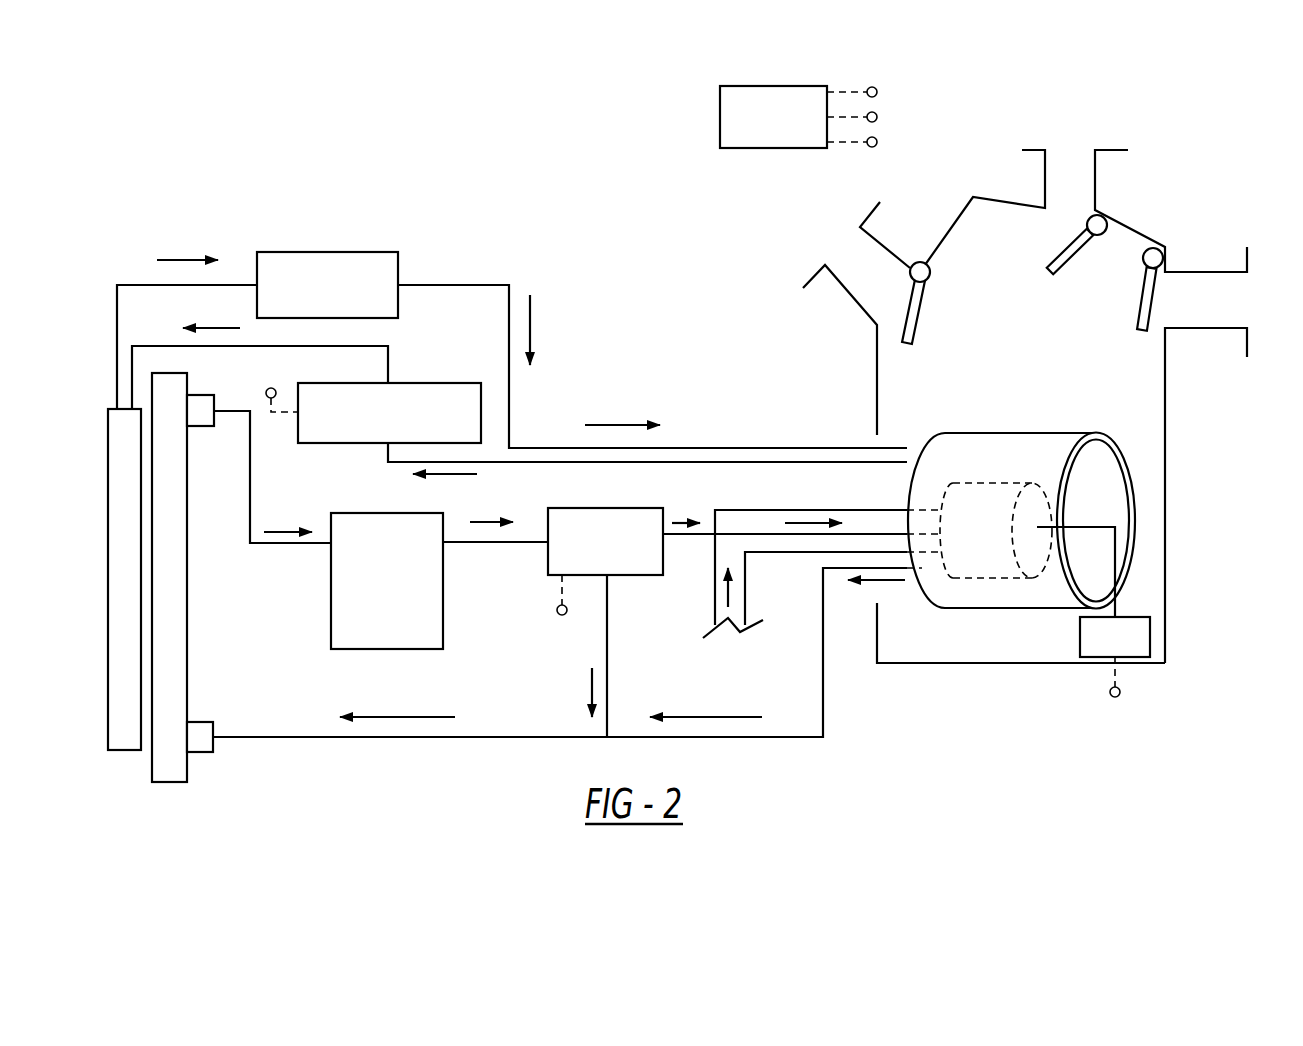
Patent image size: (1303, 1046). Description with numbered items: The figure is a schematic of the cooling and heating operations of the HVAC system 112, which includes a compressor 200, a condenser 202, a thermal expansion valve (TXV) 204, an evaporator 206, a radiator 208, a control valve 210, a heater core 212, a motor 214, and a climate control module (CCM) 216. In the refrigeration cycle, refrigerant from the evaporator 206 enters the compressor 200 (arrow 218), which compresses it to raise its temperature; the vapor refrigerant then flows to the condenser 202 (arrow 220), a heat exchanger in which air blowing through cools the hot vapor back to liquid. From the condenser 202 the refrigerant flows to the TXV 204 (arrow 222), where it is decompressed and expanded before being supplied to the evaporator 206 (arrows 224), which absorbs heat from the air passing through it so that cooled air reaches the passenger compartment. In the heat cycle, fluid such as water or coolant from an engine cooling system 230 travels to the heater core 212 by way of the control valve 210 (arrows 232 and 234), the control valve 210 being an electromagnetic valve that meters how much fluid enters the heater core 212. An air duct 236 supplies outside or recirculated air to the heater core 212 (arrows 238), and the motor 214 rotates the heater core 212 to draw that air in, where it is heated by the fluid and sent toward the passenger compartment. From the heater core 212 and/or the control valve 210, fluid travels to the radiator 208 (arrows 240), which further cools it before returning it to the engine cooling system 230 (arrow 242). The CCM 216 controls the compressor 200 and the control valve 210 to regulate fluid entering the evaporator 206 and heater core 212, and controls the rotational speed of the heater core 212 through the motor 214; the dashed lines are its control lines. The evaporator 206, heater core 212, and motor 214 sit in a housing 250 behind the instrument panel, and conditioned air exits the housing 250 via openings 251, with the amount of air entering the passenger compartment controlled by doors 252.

The HVAC system 112 is at (247, 160).
The compressor 200 is at (430, 383).
The condenser 202 is at (109, 457).
The thermal expansion valve (TXV) 204 is at (380, 255).
The evaporator 206 is at (1037, 433).
The radiator 208 is at (187, 560).
The control valve 210 is at (547, 563).
The heater core 212 is at (970, 480).
The motor 214 is at (1080, 643).
The climate control module (CCM) 216 is at (720, 111).
The arrow 218 is at (448, 477).
The arrow 220 is at (213, 328).
The arrow 222 is at (182, 260).
The arrows 224 is at (532, 330).
The engine cooling system 230 is at (380, 513).
The arrow 232 is at (495, 520).
The arrow 234 is at (680, 520).
The air duct 236 is at (713, 607).
The arrows 238 is at (723, 587).
The arrows 240 is at (417, 717).
The arrow 242 is at (285, 532).
The housing 250 is at (1165, 390).
The openings 251 is at (863, 258).
The doors 252 is at (918, 308).